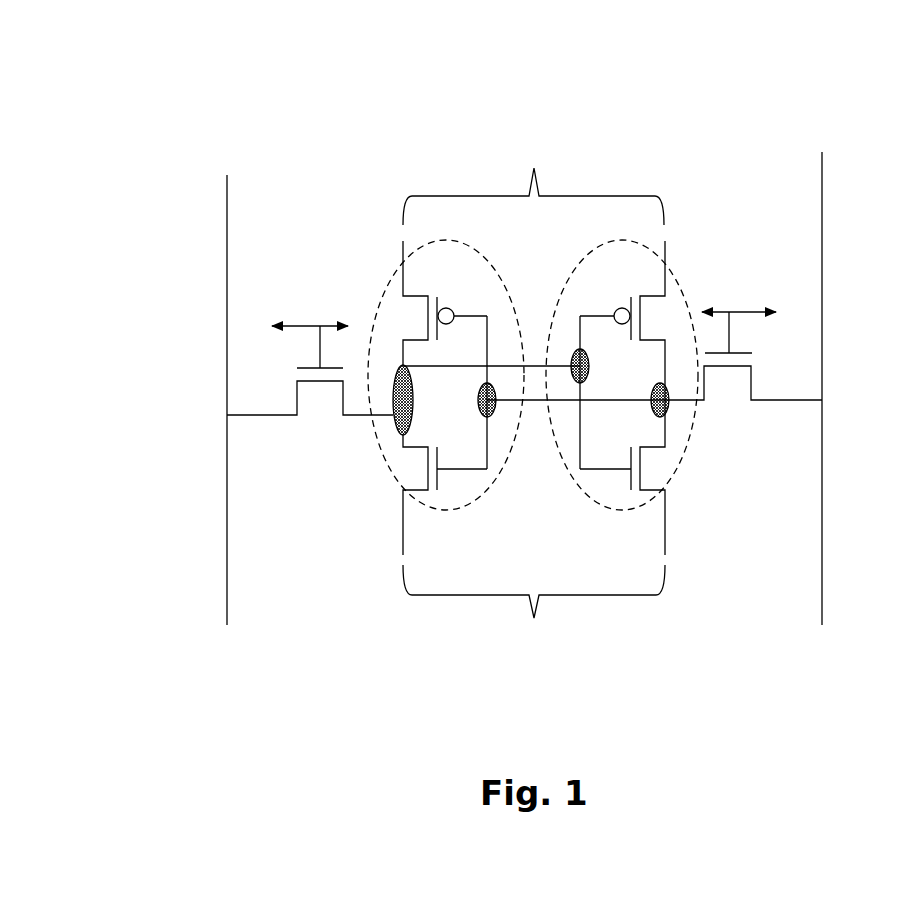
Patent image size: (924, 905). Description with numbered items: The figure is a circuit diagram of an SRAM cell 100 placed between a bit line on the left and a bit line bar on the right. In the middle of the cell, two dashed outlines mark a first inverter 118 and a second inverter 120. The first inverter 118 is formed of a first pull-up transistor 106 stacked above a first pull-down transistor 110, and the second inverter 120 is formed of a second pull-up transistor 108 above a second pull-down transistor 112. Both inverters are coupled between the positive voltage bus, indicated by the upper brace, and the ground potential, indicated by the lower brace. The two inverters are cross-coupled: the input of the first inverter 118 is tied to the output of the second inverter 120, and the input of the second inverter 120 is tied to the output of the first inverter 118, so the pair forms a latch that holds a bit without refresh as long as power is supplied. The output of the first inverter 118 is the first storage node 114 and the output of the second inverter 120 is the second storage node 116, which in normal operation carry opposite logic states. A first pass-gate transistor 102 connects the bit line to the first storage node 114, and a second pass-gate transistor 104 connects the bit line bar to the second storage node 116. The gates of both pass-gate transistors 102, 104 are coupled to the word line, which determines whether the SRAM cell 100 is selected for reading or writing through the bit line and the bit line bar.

The SRAM cell 100 is at (165, 90).
The first pass-gate transistor 102 is at (277, 388).
The second pass-gate transistor 104 is at (766, 381).
The first pull-up transistor 106 is at (405, 312).
The second pull-up transistor 108 is at (671, 312).
The first pull-down transistor 110 is at (412, 472).
The second pull-down transistor 112 is at (659, 470).
The first storage node 114 is at (394, 427).
The second storage node 116 is at (673, 410).
The first inverter 118 is at (430, 241).
The second inverter 120 is at (622, 241).